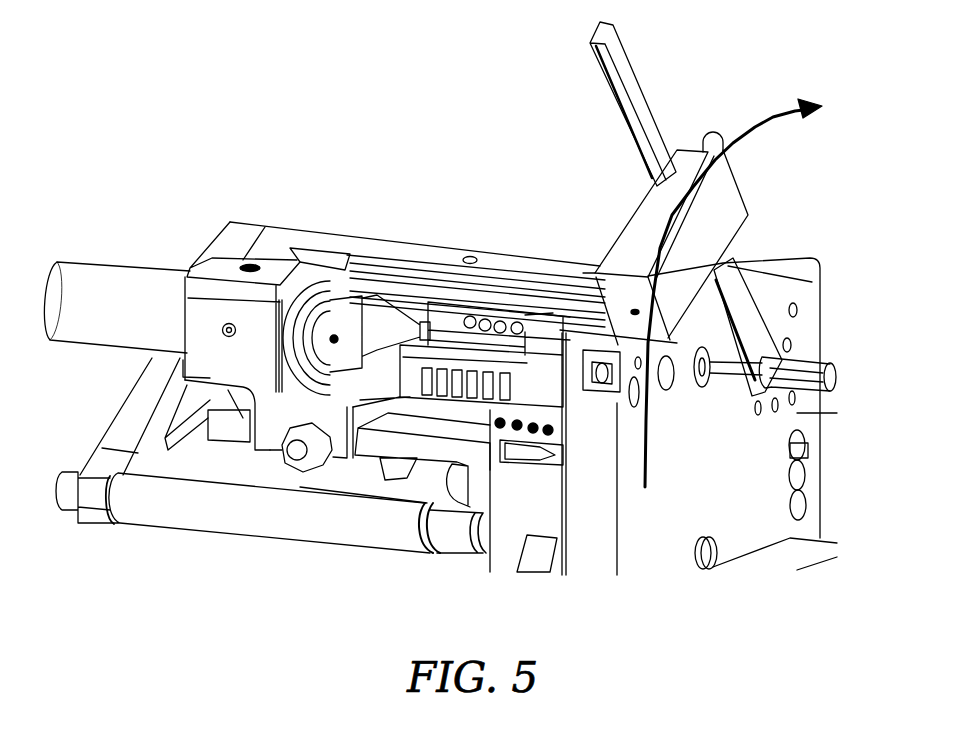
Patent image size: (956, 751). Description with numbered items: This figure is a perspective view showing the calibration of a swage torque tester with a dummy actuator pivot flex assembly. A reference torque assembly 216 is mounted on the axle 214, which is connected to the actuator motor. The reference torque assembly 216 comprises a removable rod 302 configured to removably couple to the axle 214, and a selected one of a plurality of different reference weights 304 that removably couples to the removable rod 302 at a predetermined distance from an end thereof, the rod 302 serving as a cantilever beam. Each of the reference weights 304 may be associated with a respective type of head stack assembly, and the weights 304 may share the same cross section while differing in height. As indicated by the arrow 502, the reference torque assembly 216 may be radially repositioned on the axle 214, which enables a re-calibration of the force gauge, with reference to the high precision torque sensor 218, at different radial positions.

The axle 214 is at (723, 378).
The reference torque assembly 216 is at (671, 209).
The high precision torque sensor 218 is at (118, 268).
The removable rod 302 is at (612, 93).
The reference weight 304 is at (623, 211).
The rotation direction arrow 502 is at (770, 124).